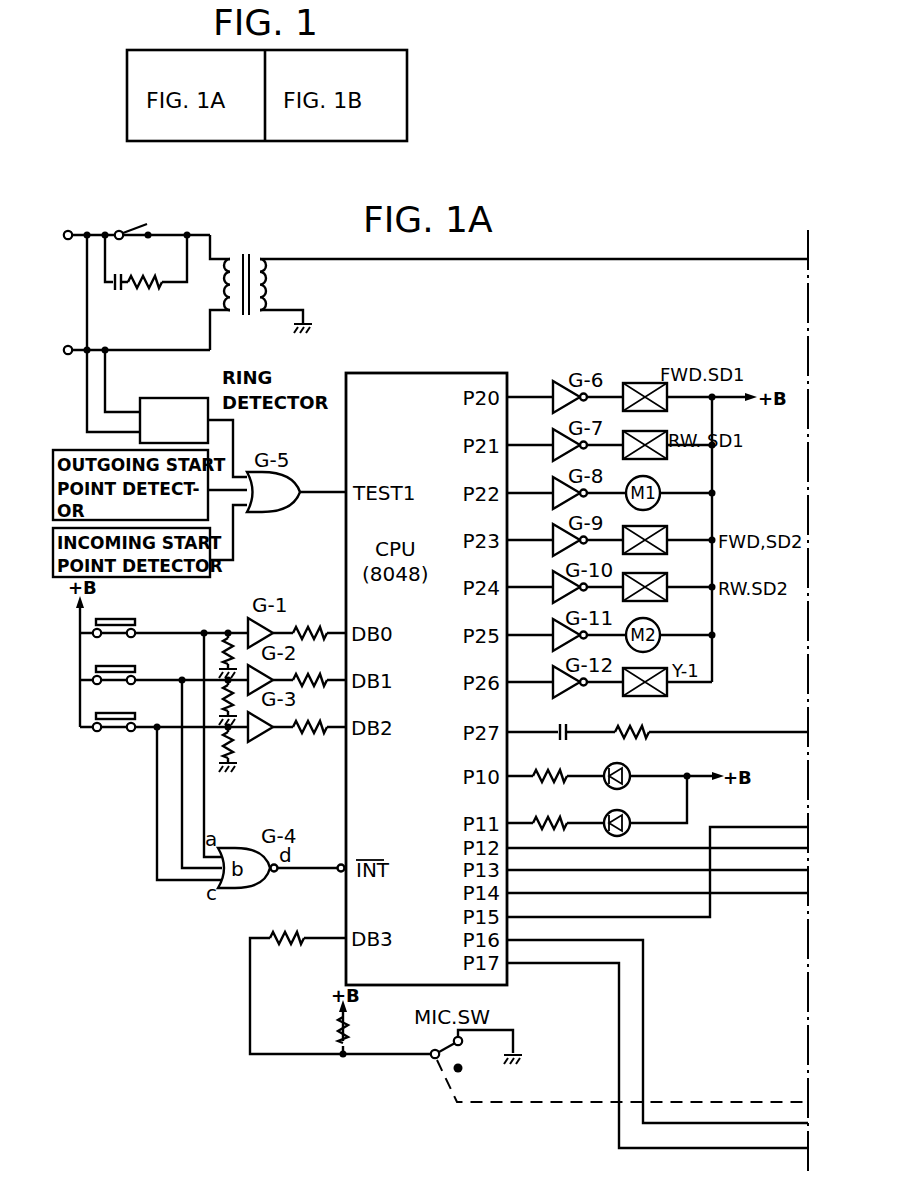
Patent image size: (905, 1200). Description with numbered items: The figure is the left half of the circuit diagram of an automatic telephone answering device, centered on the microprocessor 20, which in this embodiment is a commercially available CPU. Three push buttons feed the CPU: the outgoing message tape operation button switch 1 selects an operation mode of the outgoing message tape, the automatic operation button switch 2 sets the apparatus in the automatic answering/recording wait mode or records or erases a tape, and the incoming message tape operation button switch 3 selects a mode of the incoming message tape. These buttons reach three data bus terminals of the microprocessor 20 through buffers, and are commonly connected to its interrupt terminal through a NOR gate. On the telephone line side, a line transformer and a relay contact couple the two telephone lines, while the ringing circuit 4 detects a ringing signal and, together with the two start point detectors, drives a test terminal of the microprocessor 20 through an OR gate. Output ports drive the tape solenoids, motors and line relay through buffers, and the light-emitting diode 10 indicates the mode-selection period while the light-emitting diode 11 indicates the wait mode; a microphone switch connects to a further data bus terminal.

The outgoing message tape operation button switch 1 is at (135, 622).
The automatic operation button switch 2 is at (135, 669).
The incoming message tape operation button switch 3 is at (135, 716).
The ringing circuit 4 is at (190, 403).
The light-emitting diode 10 is at (606, 768).
The light-emitting diode 11 is at (606, 815).
The microprocessor 20 is at (509, 381).